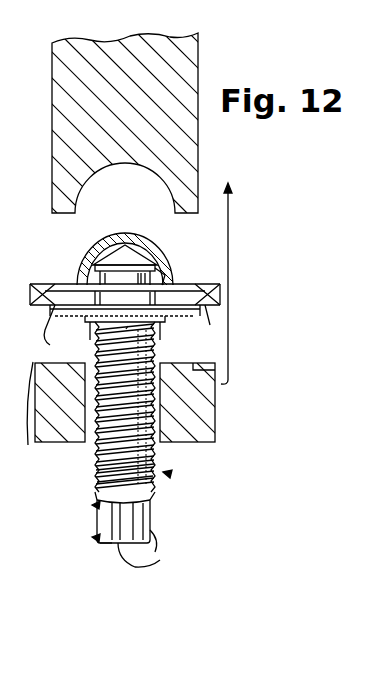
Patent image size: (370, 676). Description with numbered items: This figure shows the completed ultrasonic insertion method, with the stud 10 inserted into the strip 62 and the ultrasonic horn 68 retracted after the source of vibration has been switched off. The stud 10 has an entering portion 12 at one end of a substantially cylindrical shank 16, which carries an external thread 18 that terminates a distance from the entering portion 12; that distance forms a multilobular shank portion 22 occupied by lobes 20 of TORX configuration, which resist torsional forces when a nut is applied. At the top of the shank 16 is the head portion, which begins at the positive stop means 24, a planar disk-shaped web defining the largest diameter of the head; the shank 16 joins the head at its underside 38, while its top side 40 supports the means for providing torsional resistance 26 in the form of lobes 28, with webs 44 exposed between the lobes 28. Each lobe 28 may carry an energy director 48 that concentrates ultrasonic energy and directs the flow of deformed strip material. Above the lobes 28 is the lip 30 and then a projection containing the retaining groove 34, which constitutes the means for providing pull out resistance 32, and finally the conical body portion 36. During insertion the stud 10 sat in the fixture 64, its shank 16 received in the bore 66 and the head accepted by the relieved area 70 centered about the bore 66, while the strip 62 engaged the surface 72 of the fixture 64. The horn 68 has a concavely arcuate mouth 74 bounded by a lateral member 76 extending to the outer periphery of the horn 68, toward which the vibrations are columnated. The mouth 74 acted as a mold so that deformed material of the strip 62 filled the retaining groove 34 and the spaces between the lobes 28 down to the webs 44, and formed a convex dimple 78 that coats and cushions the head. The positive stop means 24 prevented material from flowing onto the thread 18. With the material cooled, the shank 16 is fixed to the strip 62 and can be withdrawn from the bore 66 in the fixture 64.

The stud 10 is at (94, 538).
The entering portion 12 is at (94, 505).
The shank 16 is at (172, 478).
The external thread 18 is at (100, 482).
The lobes 20 is at (130, 552).
The multilobular shank portion 22 is at (97, 545).
The positive stop means 24 is at (55, 318).
The means for providing torsional resistance 26 is at (215, 307).
The lobes 28 is at (182, 314).
The lip 30 is at (215, 300).
The means for providing pull out resistance 32 is at (85, 283).
The retaining groove 34 is at (150, 292).
The body portion 36 is at (108, 256).
The underside 38 is at (96, 350).
The top side 40 is at (126, 329).
The webs 44 is at (48, 300).
The energy directors 48 is at (70, 285).
The strip 62 is at (205, 288).
The fixture 64 is at (207, 444).
The bore 66 is at (97, 465).
The ultrasonic horn 68 is at (178, 33).
The relieved area 70 is at (182, 362).
The surface 72 is at (40, 452).
The mouth 74 is at (98, 185).
The lateral member 76 is at (197, 218).
The dimple 78 is at (128, 228).